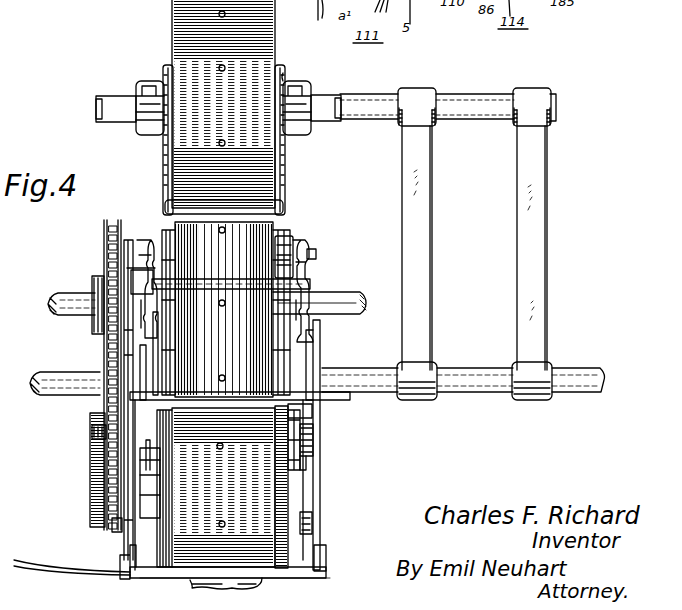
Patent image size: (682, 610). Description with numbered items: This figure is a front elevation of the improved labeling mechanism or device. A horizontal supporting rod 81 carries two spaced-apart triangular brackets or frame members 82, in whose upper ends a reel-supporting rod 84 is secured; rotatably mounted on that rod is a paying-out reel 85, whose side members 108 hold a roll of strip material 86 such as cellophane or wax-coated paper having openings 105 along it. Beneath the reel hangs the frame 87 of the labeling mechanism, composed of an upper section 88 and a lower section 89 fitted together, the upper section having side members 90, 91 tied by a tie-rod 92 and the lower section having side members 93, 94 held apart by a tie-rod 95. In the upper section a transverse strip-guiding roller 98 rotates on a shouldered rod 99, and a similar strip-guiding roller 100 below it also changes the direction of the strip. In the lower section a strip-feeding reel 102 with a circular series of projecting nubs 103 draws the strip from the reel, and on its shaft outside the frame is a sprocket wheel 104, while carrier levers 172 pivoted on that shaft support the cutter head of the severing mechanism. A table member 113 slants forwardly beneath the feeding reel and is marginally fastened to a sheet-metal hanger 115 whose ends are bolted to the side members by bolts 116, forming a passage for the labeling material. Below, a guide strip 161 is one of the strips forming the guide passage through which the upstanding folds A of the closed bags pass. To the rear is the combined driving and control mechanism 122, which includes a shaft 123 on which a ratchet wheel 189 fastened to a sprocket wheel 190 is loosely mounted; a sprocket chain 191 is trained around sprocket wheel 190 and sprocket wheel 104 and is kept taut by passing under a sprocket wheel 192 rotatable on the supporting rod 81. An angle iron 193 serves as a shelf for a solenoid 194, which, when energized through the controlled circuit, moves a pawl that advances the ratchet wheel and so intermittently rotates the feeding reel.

The supporting rod 81 is at (482, 364).
The triangular brackets or frame members 82 is at (403, 219).
The reel-supporting rod 84 is at (476, 93).
The reel 85 is at (284, 76).
The strip of material 86 is at (176, 40).
The frame 87 is at (329, 355).
The upper section 88 is at (305, 300).
The lower section 89 is at (316, 432).
The side member 90 is at (143, 250).
The side member 91 is at (303, 246).
The tie-rod 92 is at (229, 280).
The side member 93 is at (128, 472).
The side member 94 is at (316, 470).
The tie-rod 95 is at (240, 390).
The strip-guiding roller 98 is at (288, 238).
The rod 99 is at (327, 254).
The strip-guiding roller 100 is at (303, 420).
The strip-feeding reel 102 is at (276, 565).
The projecting nubs 103 is at (216, 449).
The sprocket wheel 104 is at (110, 526).
The openings 105 is at (222, 17).
The side members 108 is at (166, 154).
The table member 113 is at (300, 562).
The hanger 115 is at (302, 534).
The bolts 116 is at (314, 528).
The combined driving and control mechanism 122 is at (92, 274).
The shaft 123 is at (62, 311).
The guide strip 161 is at (108, 563).
The carrier levers 172 is at (308, 460).
The ratchet wheel 189 is at (135, 300).
The sprocket wheel 190 is at (112, 226).
The sprocket chain 191 is at (110, 350).
The sprocket wheel 192 is at (110, 388).
The angle iron 193 is at (95, 431).
The solenoid 194 is at (100, 450).
The ledge A is at (190, 587).